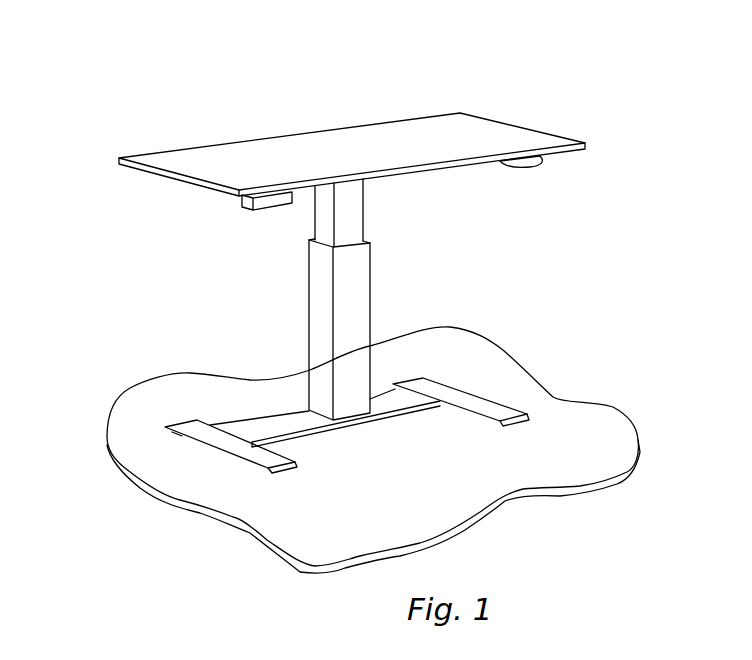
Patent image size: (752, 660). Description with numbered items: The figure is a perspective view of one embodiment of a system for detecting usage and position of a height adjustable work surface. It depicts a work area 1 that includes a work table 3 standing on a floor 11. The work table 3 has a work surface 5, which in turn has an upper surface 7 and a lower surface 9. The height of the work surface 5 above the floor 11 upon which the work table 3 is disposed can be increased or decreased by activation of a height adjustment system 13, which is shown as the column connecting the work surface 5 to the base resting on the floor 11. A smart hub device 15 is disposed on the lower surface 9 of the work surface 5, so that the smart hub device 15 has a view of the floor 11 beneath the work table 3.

The work area 1 is at (182, 100).
The work table 3 is at (232, 428).
The work surface 5 is at (305, 150).
The upper surface 7 is at (316, 143).
The lower surface 9 is at (162, 177).
The floor 11 is at (570, 432).
The height adjustment system 13 is at (370, 296).
The smart hub device 15 is at (238, 202).